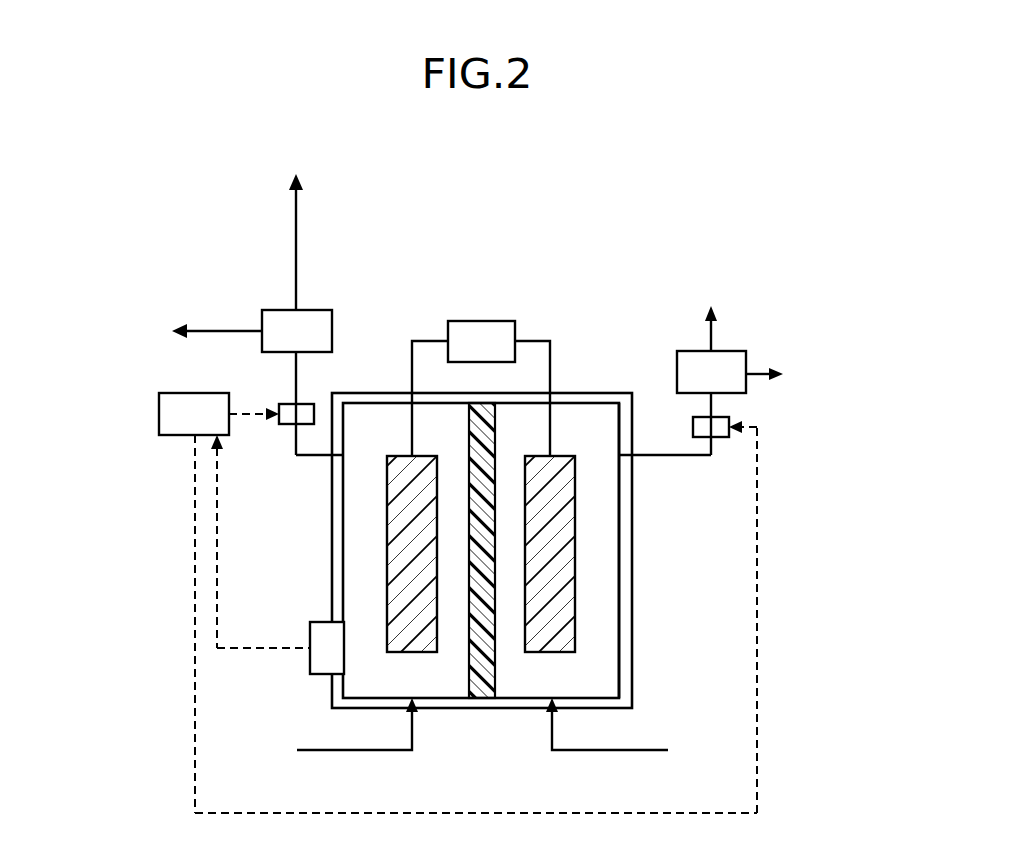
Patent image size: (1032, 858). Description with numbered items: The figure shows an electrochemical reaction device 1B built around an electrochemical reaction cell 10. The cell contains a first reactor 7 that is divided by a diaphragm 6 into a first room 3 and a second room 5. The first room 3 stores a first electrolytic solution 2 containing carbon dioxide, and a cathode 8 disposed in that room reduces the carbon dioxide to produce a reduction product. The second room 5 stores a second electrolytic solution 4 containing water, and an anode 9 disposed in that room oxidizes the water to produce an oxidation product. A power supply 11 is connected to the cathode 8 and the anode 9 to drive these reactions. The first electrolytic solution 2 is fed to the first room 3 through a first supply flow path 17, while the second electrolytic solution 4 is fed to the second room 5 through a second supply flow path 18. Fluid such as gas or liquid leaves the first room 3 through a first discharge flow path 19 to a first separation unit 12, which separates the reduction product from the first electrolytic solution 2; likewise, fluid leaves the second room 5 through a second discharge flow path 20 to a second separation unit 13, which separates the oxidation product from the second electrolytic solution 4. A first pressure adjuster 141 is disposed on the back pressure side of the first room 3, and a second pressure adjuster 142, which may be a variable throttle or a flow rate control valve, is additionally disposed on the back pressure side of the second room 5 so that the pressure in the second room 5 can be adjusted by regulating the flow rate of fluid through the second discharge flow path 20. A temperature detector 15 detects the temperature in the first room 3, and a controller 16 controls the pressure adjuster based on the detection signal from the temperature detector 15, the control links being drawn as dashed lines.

The electrochemical reaction device 1B is at (606, 243).
The first electrolytic solution 2 is at (412, 677).
The first room 3 is at (357, 582).
The second electrolytic solution 4 is at (548, 677).
The second room 5 is at (605, 585).
The diaphragm 6 is at (492, 406).
The first reactor 7 is at (631, 626).
The cathode 8 is at (410, 522).
The anode 9 is at (553, 520).
The electrochemical reaction cell 10 is at (486, 724).
The power supply 11 is at (448, 323).
The first separation unit 12 is at (272, 309).
The second separation unit 13 is at (733, 351).
The first pressure adjuster 141 is at (281, 408).
The second pressure adjuster 142 is at (694, 422).
The temperature detector 15 is at (310, 636).
The controller 16 is at (174, 394).
The first supply flow path 17 is at (360, 751).
The second supply flow path 18 is at (594, 751).
The first discharge flow path 19 is at (297, 278).
The second discharge flow path 20 is at (684, 457).